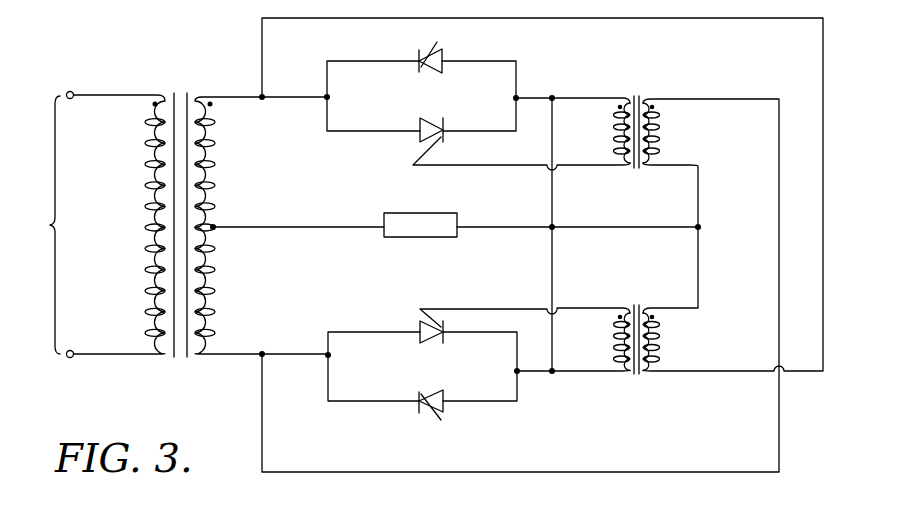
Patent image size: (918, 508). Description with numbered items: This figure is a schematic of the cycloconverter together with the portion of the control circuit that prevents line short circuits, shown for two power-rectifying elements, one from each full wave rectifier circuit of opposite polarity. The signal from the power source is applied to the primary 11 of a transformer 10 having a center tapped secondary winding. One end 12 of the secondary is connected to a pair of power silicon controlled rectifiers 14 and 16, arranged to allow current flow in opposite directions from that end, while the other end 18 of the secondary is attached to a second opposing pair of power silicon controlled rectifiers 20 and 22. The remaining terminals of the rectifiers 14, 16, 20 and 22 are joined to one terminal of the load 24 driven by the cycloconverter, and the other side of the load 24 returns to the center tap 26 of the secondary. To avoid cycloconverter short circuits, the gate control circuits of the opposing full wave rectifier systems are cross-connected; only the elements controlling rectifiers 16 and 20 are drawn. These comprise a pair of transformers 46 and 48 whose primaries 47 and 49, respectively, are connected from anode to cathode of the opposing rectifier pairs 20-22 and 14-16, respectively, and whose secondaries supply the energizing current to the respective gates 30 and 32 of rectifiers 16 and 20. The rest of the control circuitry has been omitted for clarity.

The transformer 10 is at (181, 95).
The primary 11 is at (95, 225).
The end of the secondary winding 12 is at (204, 94).
The other end of the transformer secondary 18 is at (195, 356).
The center tap 26 is at (215, 227).
The power silicon controlled rectifier 14 is at (426, 71).
The power silicon controlled rectifier 16 is at (434, 119).
The power silicon controlled rectifier 20 is at (425, 339).
The power silicon controlled rectifier 22 is at (441, 408).
The load 24 is at (437, 213).
The gate 30 is at (427, 165).
The gate 32 is at (420, 309).
The transformer 46 is at (637, 97).
The primary 47 is at (660, 139).
The transformer 48 is at (637, 374).
The primary 49 is at (660, 333).